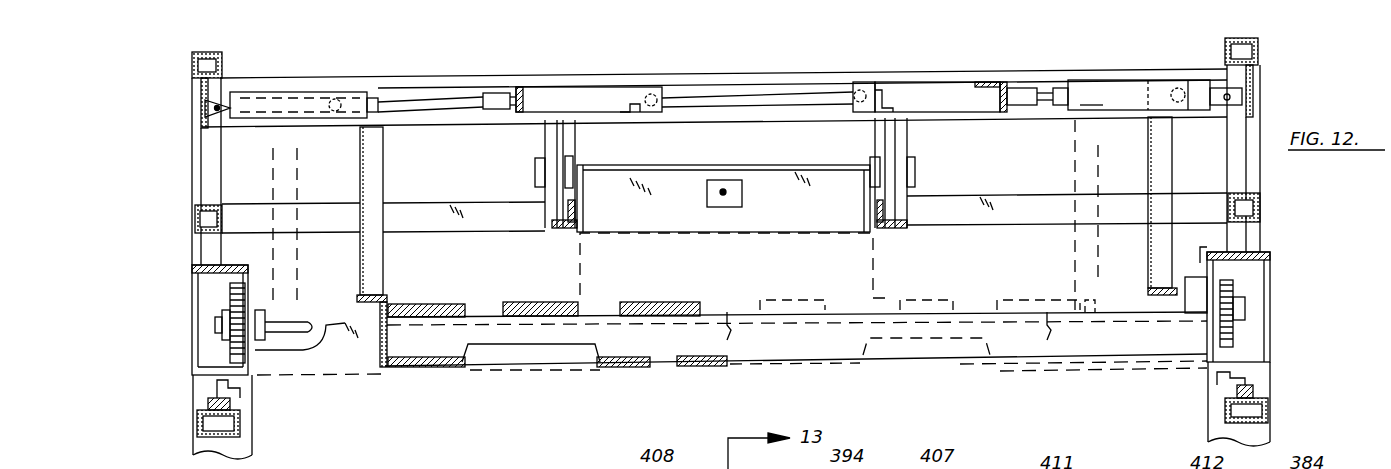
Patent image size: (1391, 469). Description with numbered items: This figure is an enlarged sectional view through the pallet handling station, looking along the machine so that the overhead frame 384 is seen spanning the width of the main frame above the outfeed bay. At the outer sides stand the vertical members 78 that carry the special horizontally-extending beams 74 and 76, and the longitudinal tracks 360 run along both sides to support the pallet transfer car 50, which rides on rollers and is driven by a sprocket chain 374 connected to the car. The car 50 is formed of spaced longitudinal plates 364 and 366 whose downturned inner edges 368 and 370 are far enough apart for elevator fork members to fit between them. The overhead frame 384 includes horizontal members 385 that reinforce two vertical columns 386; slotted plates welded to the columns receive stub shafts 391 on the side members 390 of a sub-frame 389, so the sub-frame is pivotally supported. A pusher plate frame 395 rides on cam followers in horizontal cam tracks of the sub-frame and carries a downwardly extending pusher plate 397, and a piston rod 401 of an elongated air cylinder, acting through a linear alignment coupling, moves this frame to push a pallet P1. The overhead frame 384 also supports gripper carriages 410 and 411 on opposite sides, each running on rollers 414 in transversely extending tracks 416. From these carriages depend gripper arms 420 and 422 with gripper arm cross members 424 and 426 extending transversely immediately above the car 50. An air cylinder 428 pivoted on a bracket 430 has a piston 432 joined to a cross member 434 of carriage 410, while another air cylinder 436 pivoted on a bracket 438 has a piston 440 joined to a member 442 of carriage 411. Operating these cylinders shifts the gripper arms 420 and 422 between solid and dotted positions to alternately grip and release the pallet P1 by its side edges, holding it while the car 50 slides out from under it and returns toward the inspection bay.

The air cylinder 436 is at (283, 102).
The piston 440 is at (413, 102).
The gripper carriage 411 is at (463, 88).
The member 442 is at (525, 85).
The track 416 is at (725, 93).
The roller 414 is at (862, 85).
The gripper carriage 410 is at (932, 80).
The cross member 434 is at (985, 82).
The piston 432 is at (1047, 87).
The air cylinder 428 is at (1083, 85).
The bracket 430 is at (1255, 75).
The overhead frame 384 is at (1265, 125).
The bracket 438 is at (199, 110).
The gripper arm 422 is at (360, 155).
The gripper arm 420 is at (1148, 150).
The vertical column 386 is at (548, 137).
The stub shaft 391 is at (535, 172).
The side member 390 is at (585, 222).
The horizontal member 385 is at (435, 227).
The pusher plate frame 395 is at (775, 177).
The sub-frame 389 is at (687, 138).
The piston rod 401 is at (722, 196).
The pusher plate 397 is at (882, 260).
The pallet P1 is at (527, 302).
The longitudinal plate 366 is at (377, 378).
The gripper arm cross member 424 is at (1150, 303).
The pallet transfer car 50 is at (476, 372).
The downturned inner edge 370 is at (493, 374).
The downturned inner edge 368 is at (957, 368).
The longitudinal plate 364 is at (1038, 368).
The gripper arm cross member 426 is at (390, 297).
The beam 74 is at (192, 290).
The beam 76 is at (1272, 305).
The sprocket chain 374 is at (230, 290).
The longitudinal track 360 is at (210, 403).
The vertical member 78 is at (195, 443).